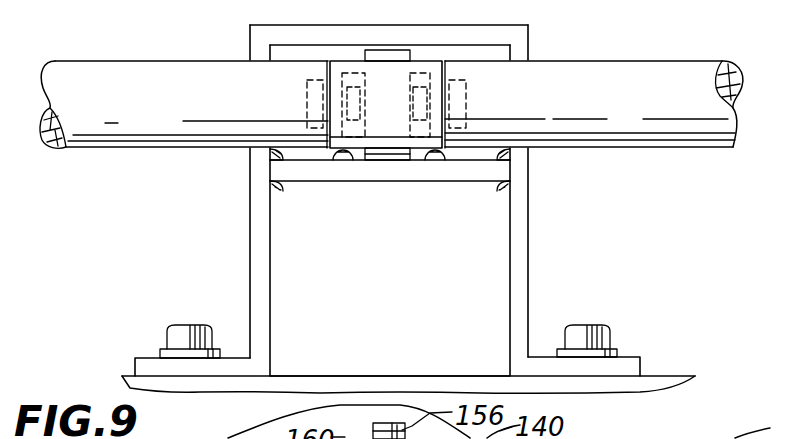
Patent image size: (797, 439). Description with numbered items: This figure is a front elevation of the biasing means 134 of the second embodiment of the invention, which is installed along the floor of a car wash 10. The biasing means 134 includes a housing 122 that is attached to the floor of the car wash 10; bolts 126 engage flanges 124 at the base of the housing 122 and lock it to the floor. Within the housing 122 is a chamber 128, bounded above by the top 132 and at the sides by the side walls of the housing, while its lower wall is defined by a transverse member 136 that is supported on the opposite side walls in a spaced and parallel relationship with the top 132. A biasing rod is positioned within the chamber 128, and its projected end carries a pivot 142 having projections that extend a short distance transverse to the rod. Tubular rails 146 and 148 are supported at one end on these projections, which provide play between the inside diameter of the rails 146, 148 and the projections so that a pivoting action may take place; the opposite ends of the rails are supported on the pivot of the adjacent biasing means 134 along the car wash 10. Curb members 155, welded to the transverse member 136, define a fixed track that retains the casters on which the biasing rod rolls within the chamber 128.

The car wash 10 is at (32, 95).
The housing 122 is at (520, 212).
The flanges 124 is at (150, 368).
The bolts 126 is at (205, 322).
The chamber 128 is at (485, 157).
The top 132 is at (523, 43).
The biasing means 134 is at (238, 181).
The transverse member 136 is at (404, 167).
The pivot 142 is at (383, 146).
The tubular rail 146 is at (108, 142).
The tubular rail 148 is at (648, 138).
The curb members 155 is at (342, 162).